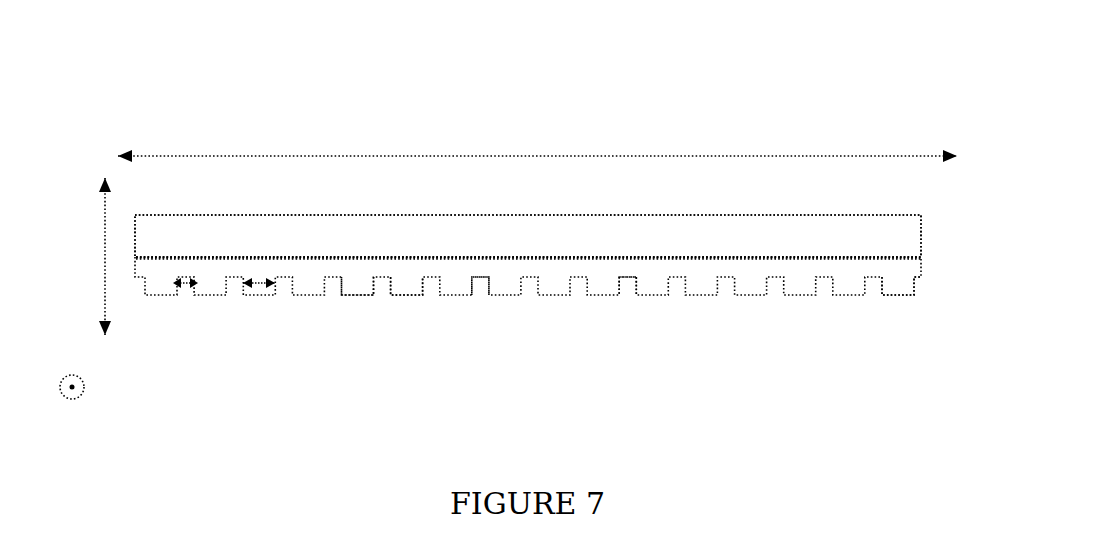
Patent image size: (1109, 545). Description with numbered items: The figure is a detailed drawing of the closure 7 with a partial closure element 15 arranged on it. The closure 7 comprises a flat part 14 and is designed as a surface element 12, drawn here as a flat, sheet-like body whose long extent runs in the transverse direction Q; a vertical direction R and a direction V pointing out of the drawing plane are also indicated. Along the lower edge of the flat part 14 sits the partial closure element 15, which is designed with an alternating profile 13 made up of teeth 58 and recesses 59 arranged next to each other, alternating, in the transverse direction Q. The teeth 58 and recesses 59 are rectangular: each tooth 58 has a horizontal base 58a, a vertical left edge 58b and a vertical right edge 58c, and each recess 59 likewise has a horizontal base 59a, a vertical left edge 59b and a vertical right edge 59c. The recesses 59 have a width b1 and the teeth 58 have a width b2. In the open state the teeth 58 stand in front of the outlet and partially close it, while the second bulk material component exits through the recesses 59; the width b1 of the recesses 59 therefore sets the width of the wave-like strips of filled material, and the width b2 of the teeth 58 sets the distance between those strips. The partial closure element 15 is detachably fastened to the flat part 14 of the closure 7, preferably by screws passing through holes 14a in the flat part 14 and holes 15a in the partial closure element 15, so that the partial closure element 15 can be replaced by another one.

The closure 7 is at (148, 127).
The surface element 12 is at (538, 236).
The alternating profile 13 is at (687, 285).
The flat part 14 is at (808, 232).
The partial closure element 15 is at (902, 290).
The holes 14a is at (712, 266).
The holes 15a is at (894, 275).
The teeth 58 is at (407, 287).
The horizontal base 58a is at (355, 295).
The vertical left edge 58b is at (342, 294).
The vertical right edge 58c is at (374, 294).
The recesses 59 is at (482, 285).
The horizontal base 59a is at (627, 277).
The vertical left edge 59b is at (617, 278).
The vertical right edge 59c is at (637, 278).
The width of the recesses b1 is at (186, 284).
The width of the teeth b2 is at (258, 284).
The transverse direction Q is at (520, 155).
The thickness direction / dimension R is at (105, 250).
The viewing / width direction (out of page) V is at (84, 388).